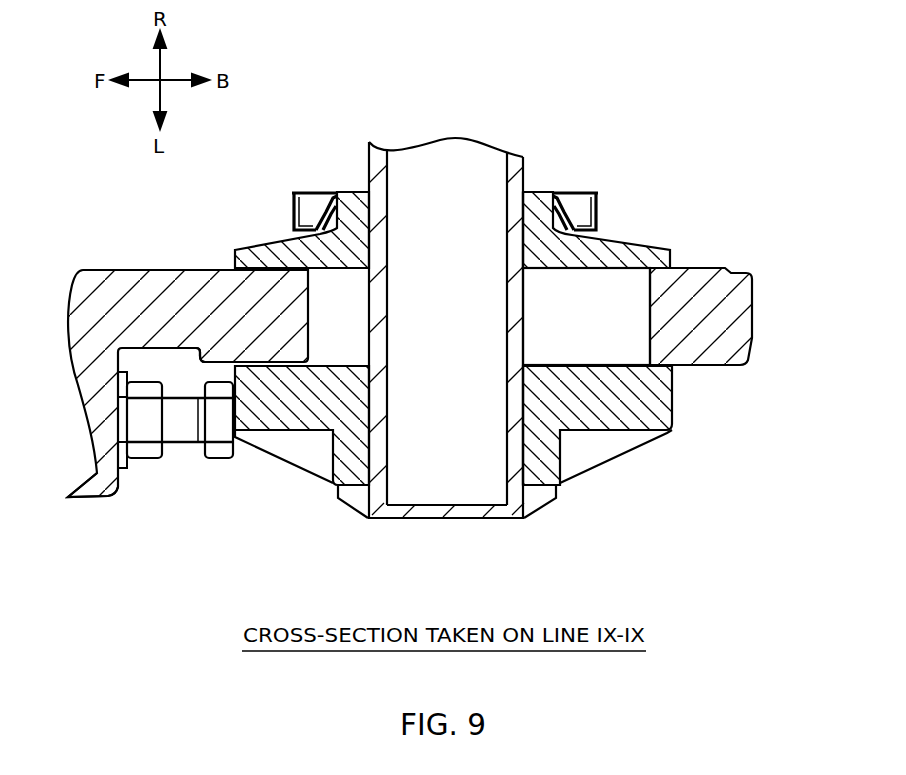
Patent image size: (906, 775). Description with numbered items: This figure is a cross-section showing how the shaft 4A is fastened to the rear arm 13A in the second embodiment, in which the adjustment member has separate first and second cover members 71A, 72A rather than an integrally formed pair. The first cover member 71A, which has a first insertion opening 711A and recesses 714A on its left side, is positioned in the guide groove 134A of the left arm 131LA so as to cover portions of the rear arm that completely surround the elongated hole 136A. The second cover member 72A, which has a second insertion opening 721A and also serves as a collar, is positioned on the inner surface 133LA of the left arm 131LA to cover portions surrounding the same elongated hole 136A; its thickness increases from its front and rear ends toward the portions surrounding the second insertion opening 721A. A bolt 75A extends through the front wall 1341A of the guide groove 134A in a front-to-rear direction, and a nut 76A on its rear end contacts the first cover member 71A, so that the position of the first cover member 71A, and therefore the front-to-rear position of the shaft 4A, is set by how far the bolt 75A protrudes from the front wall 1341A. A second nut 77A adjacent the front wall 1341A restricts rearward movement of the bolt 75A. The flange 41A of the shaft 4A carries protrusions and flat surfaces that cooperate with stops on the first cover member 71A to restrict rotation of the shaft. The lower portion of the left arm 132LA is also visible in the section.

The rear arm 13A is at (76, 262).
The left arm 131LA is at (188, 283).
The guide groove 134A is at (198, 344).
The lower wall portion of housing 132LA is at (87, 497).
The front wall 1341A is at (120, 480).
The bolt 75A is at (172, 403).
The nut 77A is at (142, 447).
The nut 76A is at (220, 452).
The shaft 4A is at (513, 168).
The flange 41A is at (533, 505).
The second cover member 72A is at (605, 248).
The second insertion opening 721A is at (523, 223).
The inner surface 133LA is at (707, 267).
The elongated hole 136A is at (650, 297).
The first cover member 71A is at (660, 395).
The first insertion opening 711A is at (513, 400).
The recesses 714A is at (560, 445).